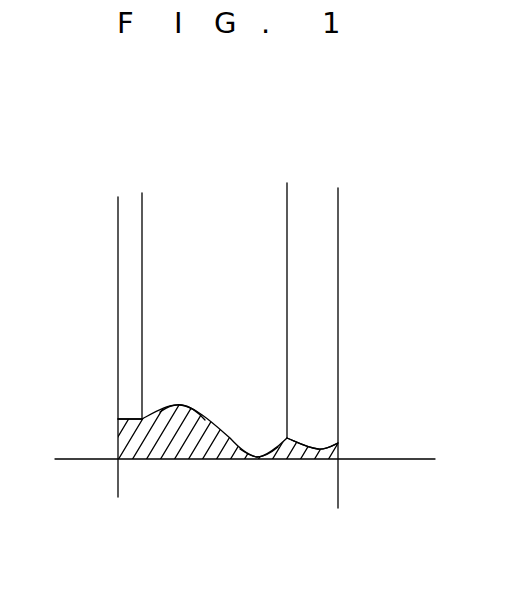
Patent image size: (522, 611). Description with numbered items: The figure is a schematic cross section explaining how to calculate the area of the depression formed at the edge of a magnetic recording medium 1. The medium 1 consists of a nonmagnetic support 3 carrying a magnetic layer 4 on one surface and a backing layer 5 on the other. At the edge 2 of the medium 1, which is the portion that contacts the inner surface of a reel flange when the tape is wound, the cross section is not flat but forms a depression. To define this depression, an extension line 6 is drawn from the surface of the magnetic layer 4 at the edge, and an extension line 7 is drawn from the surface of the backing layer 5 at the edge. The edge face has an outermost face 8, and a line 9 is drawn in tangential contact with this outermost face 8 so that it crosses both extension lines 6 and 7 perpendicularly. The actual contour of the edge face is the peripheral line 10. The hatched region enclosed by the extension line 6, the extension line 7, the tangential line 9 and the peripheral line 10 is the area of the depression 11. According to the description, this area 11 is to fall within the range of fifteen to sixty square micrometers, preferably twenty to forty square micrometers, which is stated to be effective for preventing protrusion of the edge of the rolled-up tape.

The magnetic recording medium 1 is at (374, 133).
The edge of the medium 2 is at (260, 387).
The nonmagnetic support 3 is at (206, 215).
The magnetic layer 4 is at (313, 265).
The backing layer 5 is at (127, 259).
The extension line from the surface of the magnetic layer 6 is at (343, 450).
The extension line from the surface of the backing layer 7 is at (118, 440).
The outermost face of the cross section of the edge 8 is at (257, 460).
The tangential line 9 is at (200, 460).
The peripheral line along the face of the edge 10 is at (180, 405).
The area of the depression 11 is at (160, 445).